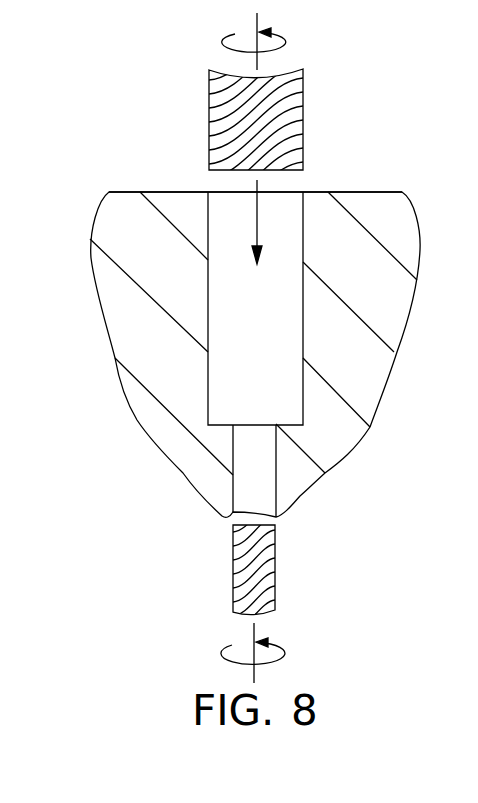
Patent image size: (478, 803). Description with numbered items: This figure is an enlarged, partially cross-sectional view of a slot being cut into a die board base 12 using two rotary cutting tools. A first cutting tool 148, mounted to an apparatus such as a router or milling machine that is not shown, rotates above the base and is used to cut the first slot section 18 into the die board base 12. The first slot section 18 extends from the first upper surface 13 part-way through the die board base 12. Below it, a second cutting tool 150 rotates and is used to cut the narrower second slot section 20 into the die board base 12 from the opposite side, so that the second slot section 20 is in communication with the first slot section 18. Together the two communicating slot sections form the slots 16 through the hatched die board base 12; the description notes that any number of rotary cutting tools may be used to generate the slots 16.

The first cutting tool 148 is at (209, 113).
The die board base 12 is at (128, 180).
The first upper surface 13 is at (380, 192).
The first slot section 18 is at (303, 251).
The slots 16 is at (186, 337).
The second slot section 20 is at (276, 487).
The second cutting tool 150 is at (233, 561).